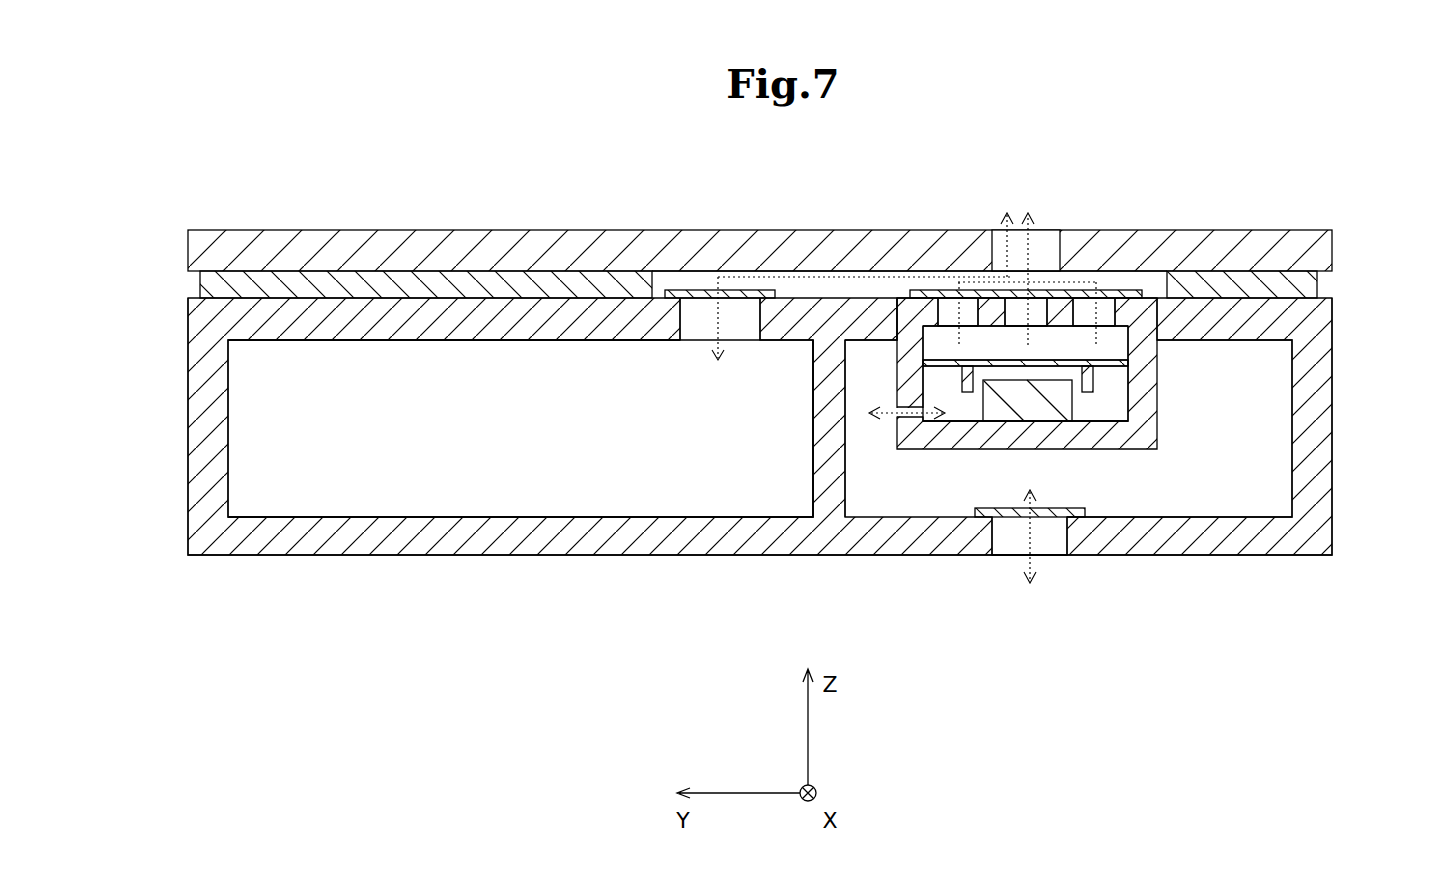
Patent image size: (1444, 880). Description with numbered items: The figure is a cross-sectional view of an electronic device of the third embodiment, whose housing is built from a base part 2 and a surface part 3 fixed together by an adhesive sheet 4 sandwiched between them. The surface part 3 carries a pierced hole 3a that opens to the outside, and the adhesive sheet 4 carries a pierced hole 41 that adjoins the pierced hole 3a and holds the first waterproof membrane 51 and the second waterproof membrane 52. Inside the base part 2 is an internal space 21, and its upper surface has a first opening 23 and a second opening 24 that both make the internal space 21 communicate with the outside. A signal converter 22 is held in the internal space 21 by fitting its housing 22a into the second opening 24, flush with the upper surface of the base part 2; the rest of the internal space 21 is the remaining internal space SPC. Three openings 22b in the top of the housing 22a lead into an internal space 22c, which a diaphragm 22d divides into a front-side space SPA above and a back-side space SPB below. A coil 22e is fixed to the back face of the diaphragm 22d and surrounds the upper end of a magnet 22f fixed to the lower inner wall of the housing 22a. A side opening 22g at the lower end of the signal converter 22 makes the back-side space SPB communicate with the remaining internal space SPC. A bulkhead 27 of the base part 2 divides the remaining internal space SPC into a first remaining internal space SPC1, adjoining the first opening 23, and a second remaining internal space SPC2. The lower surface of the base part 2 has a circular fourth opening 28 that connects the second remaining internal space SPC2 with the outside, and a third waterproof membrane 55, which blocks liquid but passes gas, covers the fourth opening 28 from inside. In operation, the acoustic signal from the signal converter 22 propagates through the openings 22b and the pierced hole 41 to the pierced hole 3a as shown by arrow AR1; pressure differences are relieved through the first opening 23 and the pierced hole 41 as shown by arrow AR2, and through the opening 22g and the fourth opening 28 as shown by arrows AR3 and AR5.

The base part 2 is at (280, 558).
The surface part 3 is at (290, 230).
The pierced hole 3a is at (1053, 255).
The adhesive sheet 4 is at (201, 284).
The internal space 21 is at (470, 483).
The signal converter 22 is at (1158, 433).
The housing 22a is at (1150, 420).
The openings 22b is at (948, 317).
The internal space 22c is at (1118, 380).
The diaphragm 22d is at (1006, 368).
The coil 22e is at (961, 394).
The magnet 22f is at (1077, 404).
The opening 22g is at (921, 420).
The first opening 23 is at (693, 324).
The second opening 24 is at (904, 317).
The bulkhead 27 is at (810, 411).
The fourth opening 28 is at (1025, 519).
The pierced hole 41 is at (1128, 272).
The first waterproof membrane 51 is at (1154, 283).
The second waterproof membrane 52 is at (673, 295).
The third waterproof membrane 55 is at (1053, 541).
The front-side space SPA is at (1114, 348).
The back-side space SPB is at (1115, 400).
The remaining internal space SPC is at (386, 464).
The first remaining internal space SPC1 is at (642, 472).
The second remaining internal space SPC2 is at (1262, 484).
The arrow AR1 is at (1010, 276).
The arrow AR2 is at (820, 283).
The arrow AR3 is at (882, 415).
The arrow AR5 is at (1030, 586).